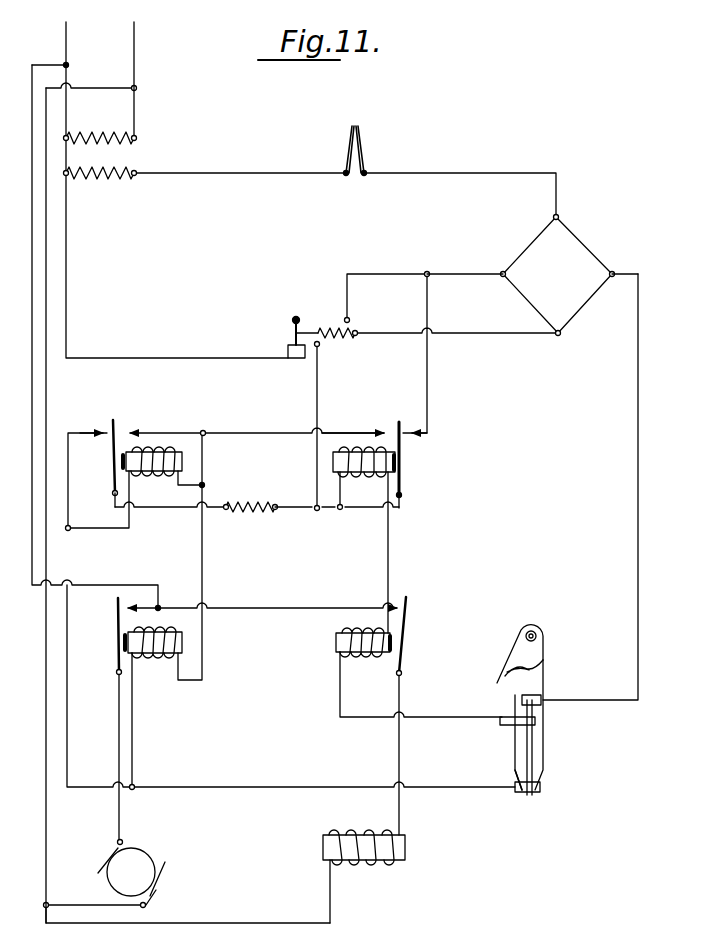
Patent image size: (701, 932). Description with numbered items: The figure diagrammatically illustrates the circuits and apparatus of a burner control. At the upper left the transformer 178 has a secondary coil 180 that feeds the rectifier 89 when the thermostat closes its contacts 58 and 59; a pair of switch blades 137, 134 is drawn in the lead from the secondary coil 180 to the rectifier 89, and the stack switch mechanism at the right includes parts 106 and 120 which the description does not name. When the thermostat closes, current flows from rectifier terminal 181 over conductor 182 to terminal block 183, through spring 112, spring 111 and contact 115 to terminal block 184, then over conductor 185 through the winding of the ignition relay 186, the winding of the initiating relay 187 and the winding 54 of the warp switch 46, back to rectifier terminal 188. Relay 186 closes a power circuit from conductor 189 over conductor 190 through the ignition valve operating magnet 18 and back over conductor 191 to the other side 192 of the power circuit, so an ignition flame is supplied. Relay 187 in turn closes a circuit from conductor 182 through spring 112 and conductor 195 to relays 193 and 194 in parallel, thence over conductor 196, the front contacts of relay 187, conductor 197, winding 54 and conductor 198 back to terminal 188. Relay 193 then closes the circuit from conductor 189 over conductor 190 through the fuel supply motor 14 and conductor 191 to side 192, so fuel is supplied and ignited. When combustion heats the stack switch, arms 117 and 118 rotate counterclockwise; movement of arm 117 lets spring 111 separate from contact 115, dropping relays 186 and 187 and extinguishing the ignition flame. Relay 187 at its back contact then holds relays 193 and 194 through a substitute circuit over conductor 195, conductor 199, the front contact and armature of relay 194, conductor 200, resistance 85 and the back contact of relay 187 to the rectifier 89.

The other side of the power circuit 192 is at (66, 35).
The conductor of the power circuit 189 is at (134, 35).
The transformer 178 is at (95, 130).
The secondary coil 180 is at (107, 182).
The switch contact 137 is at (348, 142).
The switch contact 134 is at (362, 142).
The rectifier 89 is at (585, 246).
The rectifier terminal 181 is at (619, 272).
The conductor 182 is at (638, 452).
The conductor 198 is at (388, 274).
The rectifier terminal 188 is at (476, 263).
The winding of the warp switch 54 is at (330, 325).
The warp switch 46 is at (355, 338).
The thermostat contact 59 is at (286, 332).
The thermostat contact 58 is at (288, 352).
The conductor 196 is at (317, 383).
The conductor 199 is at (157, 433).
The relay 194 is at (182, 460).
The conductor 200 is at (178, 510).
The resistance 85 is at (252, 519).
The conductor 197 is at (355, 510).
The initiating relay 187 is at (333, 462).
The conductor 191 is at (32, 402).
The conductor 190 is at (46, 381).
The relay 193 is at (182, 643).
The ignition relay 186 is at (336, 645).
The conductor 185 is at (375, 722).
The conductor 195 is at (221, 775).
The fuel supply motor 14 is at (145, 862).
The ignition valve operating magnet 18 is at (400, 851).
The arm 118 is at (515, 660).
The pivot 106 is at (548, 640).
The spring 120 is at (505, 682).
The arm 117 is at (546, 684).
The terminal block 183 is at (541, 705).
The terminal block 184 is at (510, 727).
The contact 115 is at (548, 738).
The spring 111 is at (545, 765).
The spring 112 is at (515, 770).